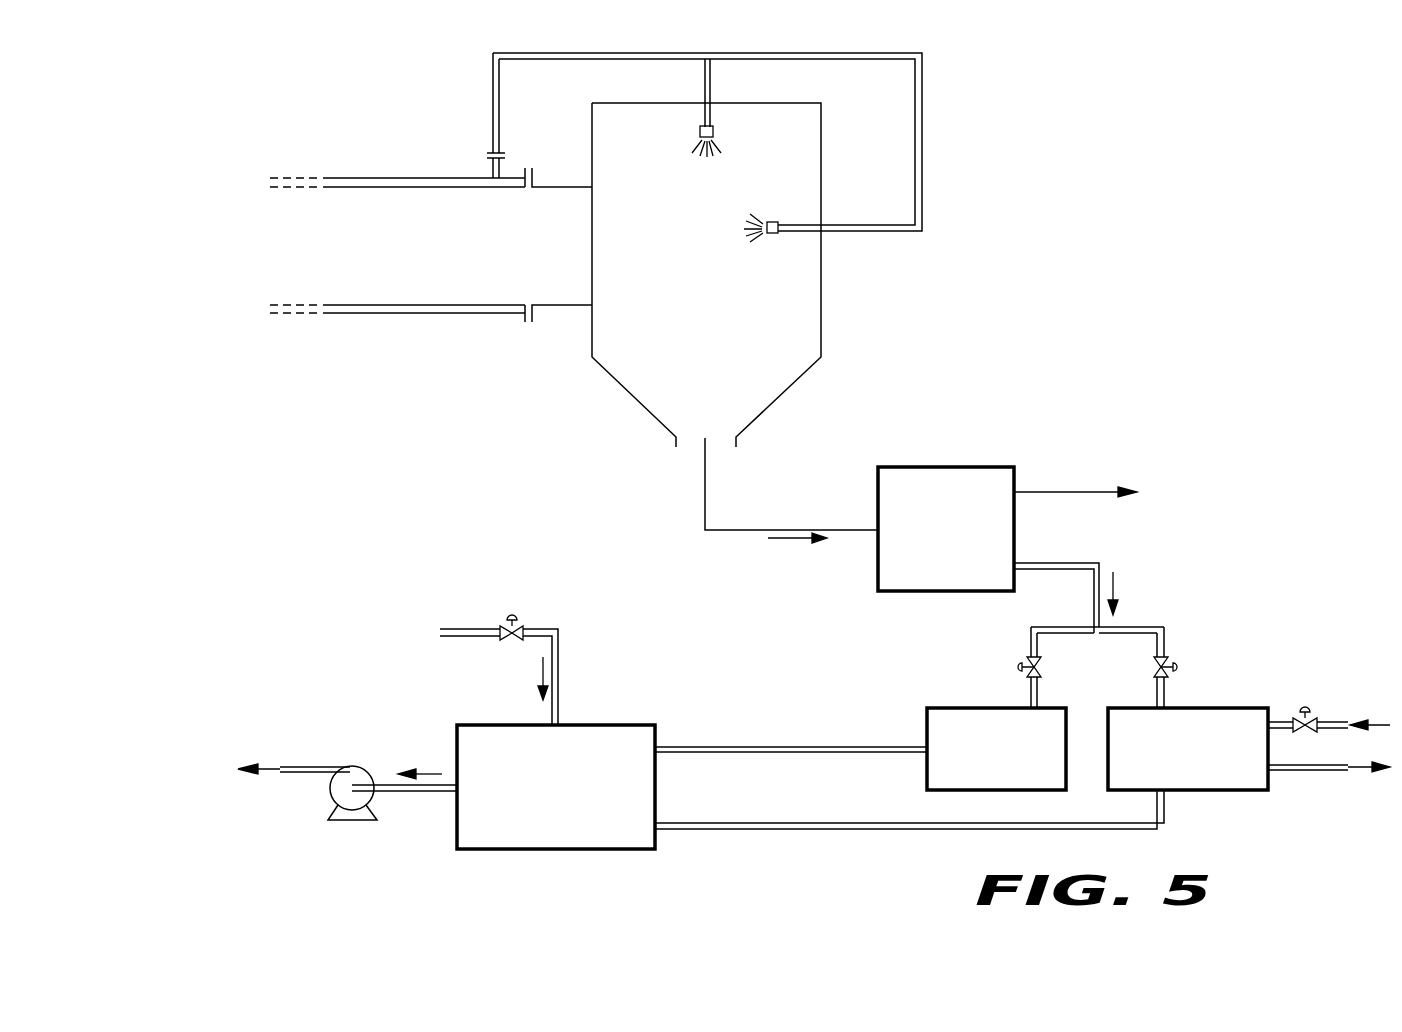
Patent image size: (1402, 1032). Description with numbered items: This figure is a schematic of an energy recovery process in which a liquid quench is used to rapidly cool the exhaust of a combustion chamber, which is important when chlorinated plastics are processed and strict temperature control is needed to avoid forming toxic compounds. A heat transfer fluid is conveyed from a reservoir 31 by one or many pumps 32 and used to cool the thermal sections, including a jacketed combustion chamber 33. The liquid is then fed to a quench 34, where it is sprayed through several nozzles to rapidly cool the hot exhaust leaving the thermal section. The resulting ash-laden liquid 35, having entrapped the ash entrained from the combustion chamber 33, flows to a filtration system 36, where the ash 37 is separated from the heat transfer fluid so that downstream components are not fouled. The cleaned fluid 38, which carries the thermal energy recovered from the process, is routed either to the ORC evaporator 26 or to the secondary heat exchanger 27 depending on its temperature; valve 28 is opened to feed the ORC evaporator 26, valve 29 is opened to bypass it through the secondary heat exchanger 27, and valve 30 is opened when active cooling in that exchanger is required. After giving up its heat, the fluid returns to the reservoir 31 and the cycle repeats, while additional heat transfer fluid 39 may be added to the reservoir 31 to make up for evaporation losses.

The ORC evaporator 26 is at (935, 727).
The secondary heat exchanger 27 is at (1212, 785).
The valve 28 is at (1028, 660).
The valve 29 is at (1167, 660).
The valve 30 is at (1313, 720).
The reservoir 31 is at (557, 833).
The pump 32 is at (360, 775).
The jacketed combustion chamber 33 is at (521, 265).
The quench 34 is at (696, 232).
The ash-laden liquid 35 is at (690, 443).
The filtration system 36 is at (942, 478).
The ash 37 is at (1100, 492).
The cleaned heat transfer fluid 38 is at (1068, 572).
The additional heat transfer fluid 39 is at (564, 653).